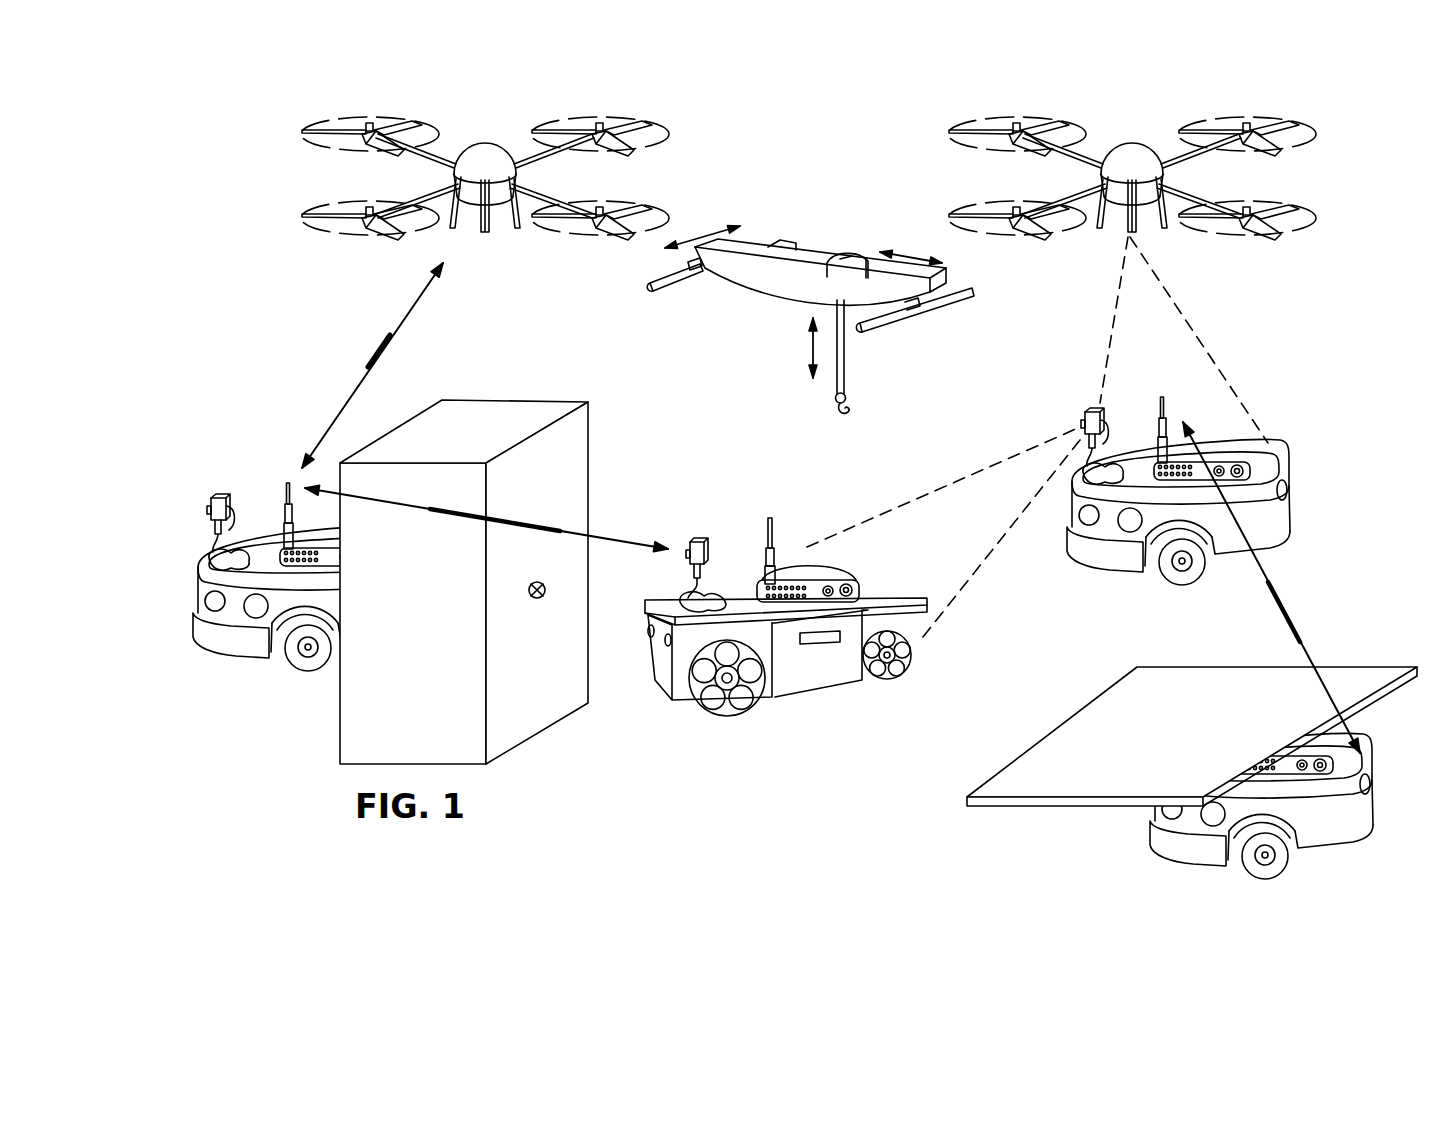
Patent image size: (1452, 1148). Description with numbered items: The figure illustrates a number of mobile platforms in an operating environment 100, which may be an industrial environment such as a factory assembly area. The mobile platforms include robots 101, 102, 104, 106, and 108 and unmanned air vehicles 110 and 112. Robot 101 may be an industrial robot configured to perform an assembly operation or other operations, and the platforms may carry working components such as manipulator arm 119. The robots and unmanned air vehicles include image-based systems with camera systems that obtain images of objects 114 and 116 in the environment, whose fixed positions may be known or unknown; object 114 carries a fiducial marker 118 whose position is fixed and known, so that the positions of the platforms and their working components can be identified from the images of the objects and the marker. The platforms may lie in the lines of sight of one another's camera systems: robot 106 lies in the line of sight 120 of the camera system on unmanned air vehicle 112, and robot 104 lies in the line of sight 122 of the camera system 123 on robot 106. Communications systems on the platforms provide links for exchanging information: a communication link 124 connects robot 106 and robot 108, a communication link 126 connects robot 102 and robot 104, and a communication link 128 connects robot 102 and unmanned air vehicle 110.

The operating environment 100 is at (233, 345).
The robot 101 is at (795, 250).
The robot 102 is at (237, 652).
The robot 104 is at (815, 692).
The robot 106 is at (1113, 568).
The robot 108 is at (1195, 860).
The unmanned air vehicle 110 is at (482, 142).
The unmanned air vehicle 112 is at (1133, 141).
The object 114 is at (517, 407).
The object 116 is at (1063, 808).
The fiducial marker 118 is at (540, 599).
The manipulator arm 119 is at (848, 258).
The line of sight 120 is at (1198, 337).
The line of sight 122 is at (935, 493).
The camera system 123 is at (1095, 413).
The communication link 124 is at (1292, 618).
The communication link 126 is at (641, 536).
The communication link 128 is at (386, 334).